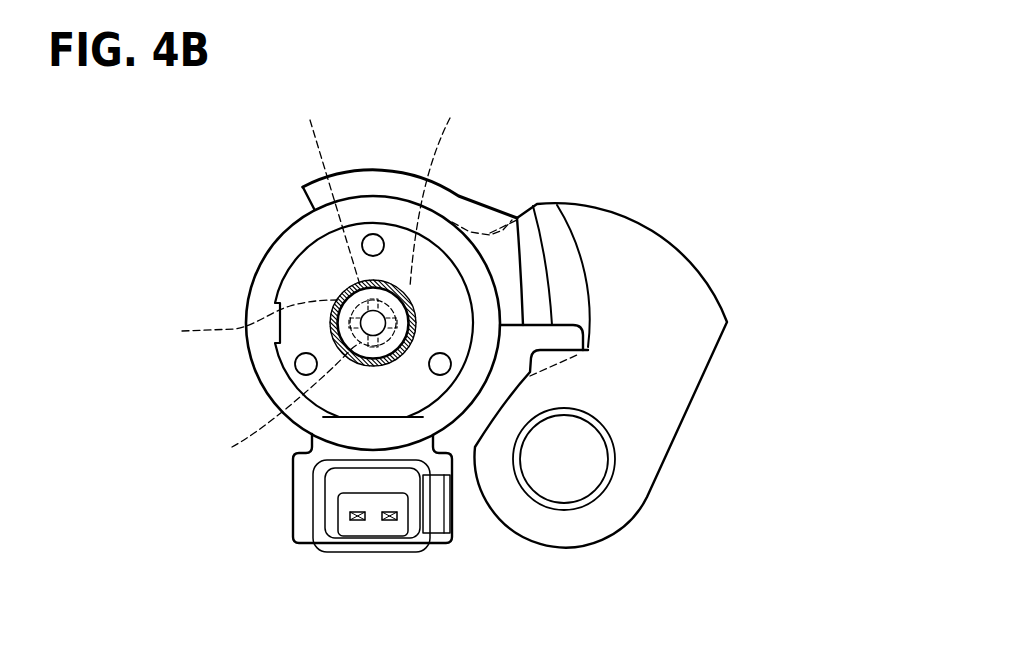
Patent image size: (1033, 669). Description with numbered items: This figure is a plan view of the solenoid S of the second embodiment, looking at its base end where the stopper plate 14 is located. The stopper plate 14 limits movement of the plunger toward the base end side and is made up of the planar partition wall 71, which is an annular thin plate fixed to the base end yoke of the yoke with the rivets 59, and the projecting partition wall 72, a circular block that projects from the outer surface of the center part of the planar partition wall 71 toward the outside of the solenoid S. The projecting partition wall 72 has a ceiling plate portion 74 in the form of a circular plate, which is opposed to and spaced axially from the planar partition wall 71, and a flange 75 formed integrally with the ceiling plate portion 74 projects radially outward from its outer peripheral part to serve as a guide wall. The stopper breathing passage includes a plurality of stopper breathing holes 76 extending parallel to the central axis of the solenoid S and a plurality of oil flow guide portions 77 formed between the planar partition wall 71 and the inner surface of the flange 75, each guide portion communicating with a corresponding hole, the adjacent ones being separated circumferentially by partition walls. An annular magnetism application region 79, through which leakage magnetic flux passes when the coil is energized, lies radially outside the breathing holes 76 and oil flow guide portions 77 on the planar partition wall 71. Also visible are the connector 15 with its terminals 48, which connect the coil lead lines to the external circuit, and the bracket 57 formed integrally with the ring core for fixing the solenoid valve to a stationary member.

The solenoid S is at (283, 188).
The stopper plate 14 is at (445, 263).
The planar partition wall 71 is at (438, 268).
The connector 15 is at (293, 520).
The terminals 48 is at (389, 522).
The bracket 57 is at (732, 324).
The rivets 59 is at (375, 243).
The projecting partition wall 72 is at (259, 418).
The ceiling plate portion 74 is at (378, 342).
The flange 75 is at (400, 350).
The stopper breathing holes 76 is at (303, 276).
The oil flow guide portions 77 is at (303, 276).
The magnetism application region 79 is at (343, 297).